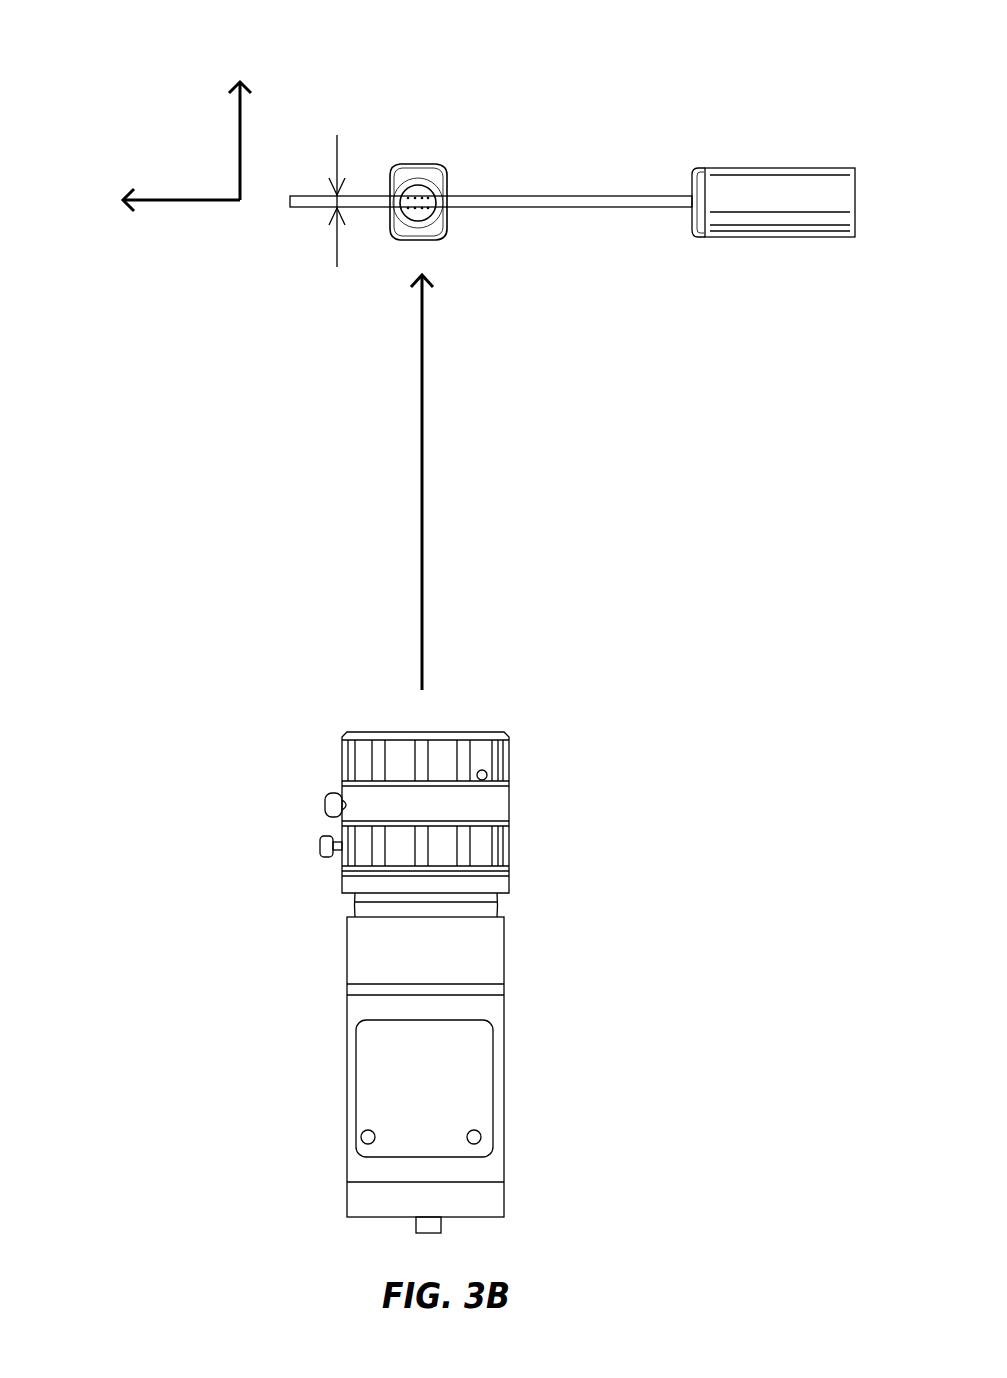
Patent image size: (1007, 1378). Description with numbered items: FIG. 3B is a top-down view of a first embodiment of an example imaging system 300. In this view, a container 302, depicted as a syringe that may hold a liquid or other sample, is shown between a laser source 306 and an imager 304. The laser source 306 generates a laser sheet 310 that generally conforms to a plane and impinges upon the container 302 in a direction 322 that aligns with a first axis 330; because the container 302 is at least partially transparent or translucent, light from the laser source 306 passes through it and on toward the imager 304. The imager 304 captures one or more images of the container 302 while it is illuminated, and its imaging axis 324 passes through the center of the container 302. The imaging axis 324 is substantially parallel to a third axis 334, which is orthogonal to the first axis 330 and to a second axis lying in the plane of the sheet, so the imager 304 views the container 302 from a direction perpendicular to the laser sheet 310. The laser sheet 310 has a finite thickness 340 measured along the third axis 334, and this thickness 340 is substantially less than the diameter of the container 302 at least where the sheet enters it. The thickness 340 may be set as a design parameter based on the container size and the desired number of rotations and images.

The imaging system 300 is at (640, 40).
The container 302 is at (448, 170).
The imager 304 is at (505, 935).
The laser source 306 is at (856, 198).
The laser sheet 310 is at (553, 208).
The direction 322 is at (153, 225).
The imaging axis 324 is at (423, 505).
The first axis 330 is at (178, 201).
The third axis 334 is at (240, 140).
The thickness 340 is at (337, 245).